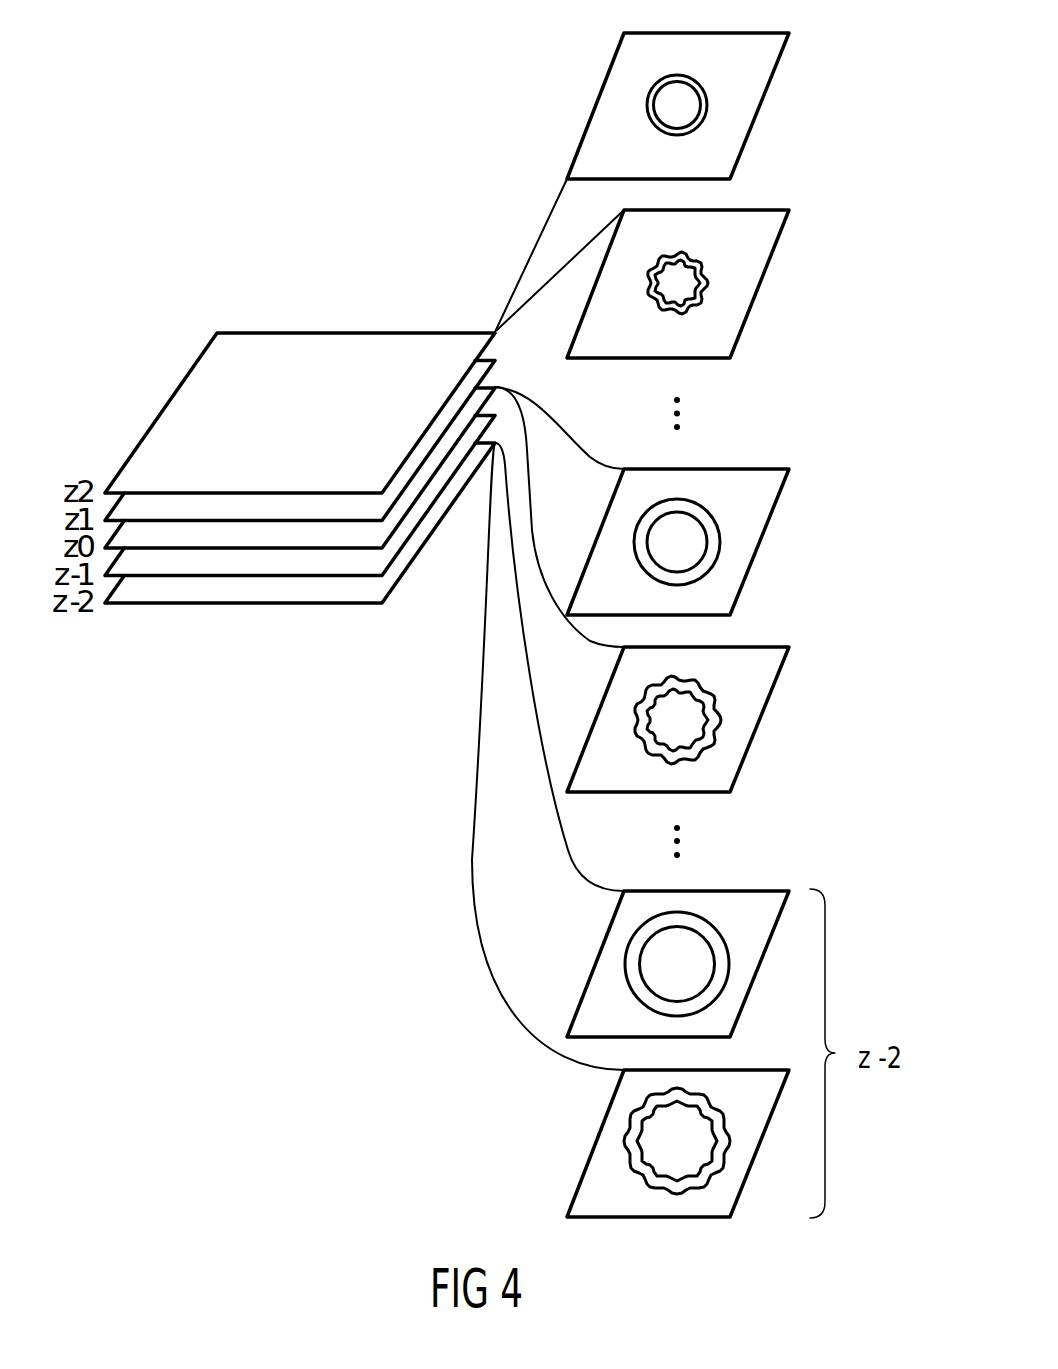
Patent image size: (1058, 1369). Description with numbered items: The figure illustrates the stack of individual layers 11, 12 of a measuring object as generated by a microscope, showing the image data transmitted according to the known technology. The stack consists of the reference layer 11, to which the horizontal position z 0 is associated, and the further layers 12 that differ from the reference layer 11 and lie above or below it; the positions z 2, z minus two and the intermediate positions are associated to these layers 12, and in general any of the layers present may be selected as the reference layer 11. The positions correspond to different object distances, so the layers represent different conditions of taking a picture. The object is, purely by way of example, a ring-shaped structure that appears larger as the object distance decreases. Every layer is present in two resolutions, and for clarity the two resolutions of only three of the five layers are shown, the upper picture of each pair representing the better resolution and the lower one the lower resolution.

The reference layer 11 is at (238, 548).
The layers different from the reference layer 12 is at (159, 577).
The z2 slice level image pair 2 is at (810, 30).
The z0 slice level image pair 0 is at (810, 468).